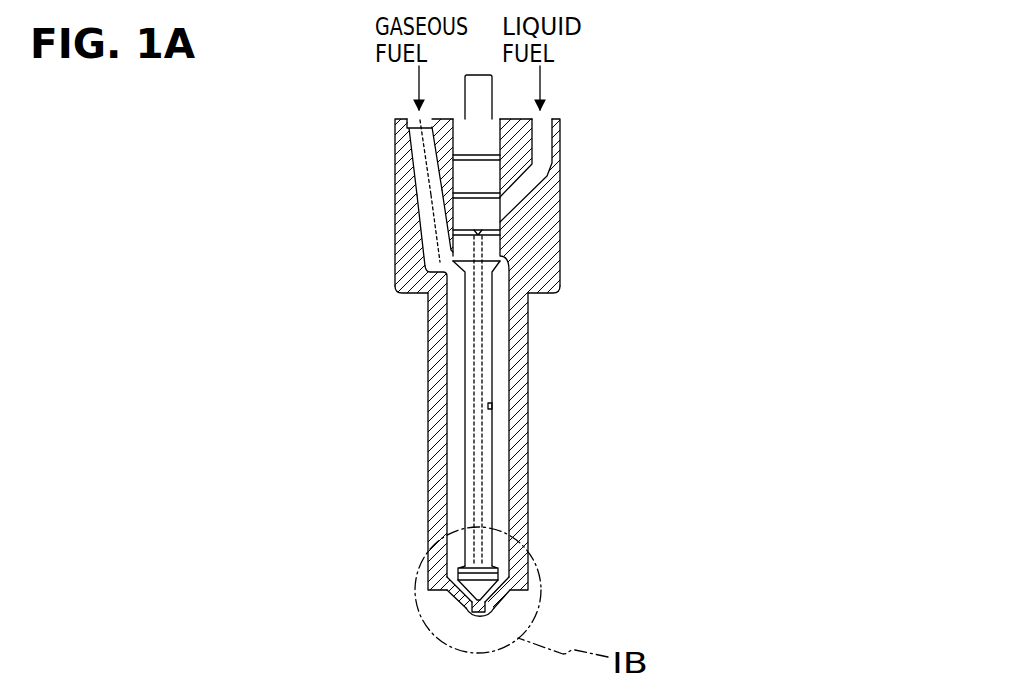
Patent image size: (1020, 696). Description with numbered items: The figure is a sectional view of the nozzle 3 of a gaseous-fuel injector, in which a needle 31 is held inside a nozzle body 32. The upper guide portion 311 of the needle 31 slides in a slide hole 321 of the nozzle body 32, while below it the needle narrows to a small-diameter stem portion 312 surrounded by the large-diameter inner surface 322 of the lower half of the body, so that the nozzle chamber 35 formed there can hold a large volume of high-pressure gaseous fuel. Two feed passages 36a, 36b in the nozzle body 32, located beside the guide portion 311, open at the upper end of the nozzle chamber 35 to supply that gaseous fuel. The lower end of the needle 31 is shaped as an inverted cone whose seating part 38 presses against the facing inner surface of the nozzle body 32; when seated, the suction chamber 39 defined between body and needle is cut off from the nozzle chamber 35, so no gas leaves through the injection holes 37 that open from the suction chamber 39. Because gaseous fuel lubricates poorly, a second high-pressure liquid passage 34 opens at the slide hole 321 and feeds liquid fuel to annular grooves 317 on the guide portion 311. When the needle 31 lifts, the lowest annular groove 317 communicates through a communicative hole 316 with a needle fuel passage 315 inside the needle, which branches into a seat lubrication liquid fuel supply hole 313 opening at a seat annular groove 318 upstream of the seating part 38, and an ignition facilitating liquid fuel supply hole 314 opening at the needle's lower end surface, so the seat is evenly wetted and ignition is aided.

The nozzle 3 is at (582, 113).
The needle 31 is at (455, 477).
The guide portion 311 is at (462, 167).
The stem portion 312 is at (476, 398).
The seat lubrication liquid fuel supply hole 313 is at (458, 570).
The ignition facilitating liquid fuel supply hole 314 is at (512, 598).
The needle fuel passage 315 is at (495, 408).
The communicative hole 316 is at (453, 233).
The annular grooves 317 is at (500, 236).
The seat annular groove 318 is at (500, 570).
The nozzle body 32 is at (428, 350).
The slide hole 321 is at (500, 178).
The inner surface 322 is at (509, 458).
The second high-pressure liquid passage 34 is at (515, 193).
The nozzle chamber 35 is at (558, 291).
The feed passage 36a is at (462, 187).
The feed passage 36b is at (425, 208).
The injection holes 37 is at (465, 618).
The seating part 38 is at (445, 590).
The suction chamber 39 is at (497, 618).